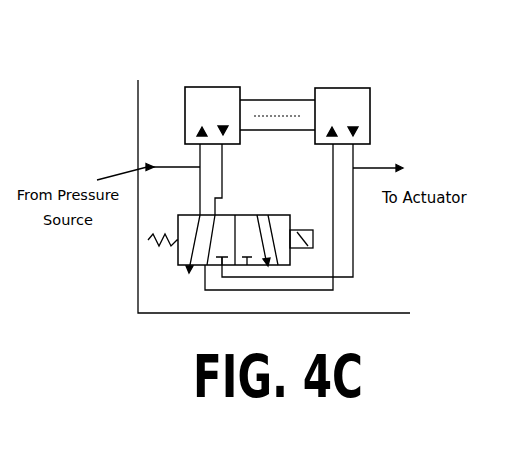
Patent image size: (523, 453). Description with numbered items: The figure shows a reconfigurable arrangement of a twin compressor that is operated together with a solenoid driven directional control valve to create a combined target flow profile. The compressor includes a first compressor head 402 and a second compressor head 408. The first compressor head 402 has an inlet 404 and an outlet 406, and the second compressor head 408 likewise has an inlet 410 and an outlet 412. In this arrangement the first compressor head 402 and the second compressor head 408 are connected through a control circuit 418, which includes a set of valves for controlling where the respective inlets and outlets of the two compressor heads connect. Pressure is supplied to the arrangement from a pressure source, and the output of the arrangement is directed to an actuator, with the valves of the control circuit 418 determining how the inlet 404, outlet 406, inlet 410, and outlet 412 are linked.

The first compressor head 402 is at (248, 63).
The inlet 404 is at (197, 131).
The outlet 406 is at (221, 127).
The second compressor head 408 is at (325, 88).
The inlet 410 is at (335, 129).
The outlet 412 is at (357, 131).
The control circuit 418 is at (180, 265).